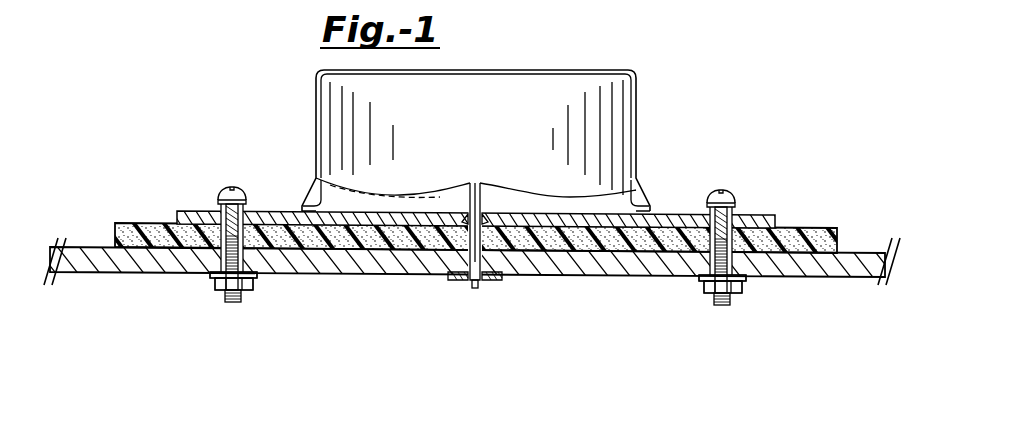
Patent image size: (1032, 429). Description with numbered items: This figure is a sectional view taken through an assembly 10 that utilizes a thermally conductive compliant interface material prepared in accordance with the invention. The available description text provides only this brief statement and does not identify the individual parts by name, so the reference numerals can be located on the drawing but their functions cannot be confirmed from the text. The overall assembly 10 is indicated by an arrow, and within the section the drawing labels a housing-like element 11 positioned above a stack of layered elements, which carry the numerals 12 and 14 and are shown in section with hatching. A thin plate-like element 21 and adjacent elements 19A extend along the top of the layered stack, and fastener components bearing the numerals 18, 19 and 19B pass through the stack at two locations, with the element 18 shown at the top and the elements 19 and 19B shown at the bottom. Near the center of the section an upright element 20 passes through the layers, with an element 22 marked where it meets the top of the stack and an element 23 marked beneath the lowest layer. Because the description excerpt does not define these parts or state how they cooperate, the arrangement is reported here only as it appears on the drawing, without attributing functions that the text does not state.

The mounting assembly 10 is at (474, 218).
The cap / housing 11 is at (636, 103).
The base layer / panel 12 is at (802, 278).
The insulation layer 14 is at (824, 227).
The bolt 18 is at (228, 188).
The nut 19 is at (216, 290).
The upper washer plate 19A is at (212, 208).
The lower washer 19B is at (254, 279).
The center post 20 is at (477, 288).
The cap flange 21 is at (634, 202).
The post seal 22 is at (468, 224).
The post collar 23 is at (447, 278).